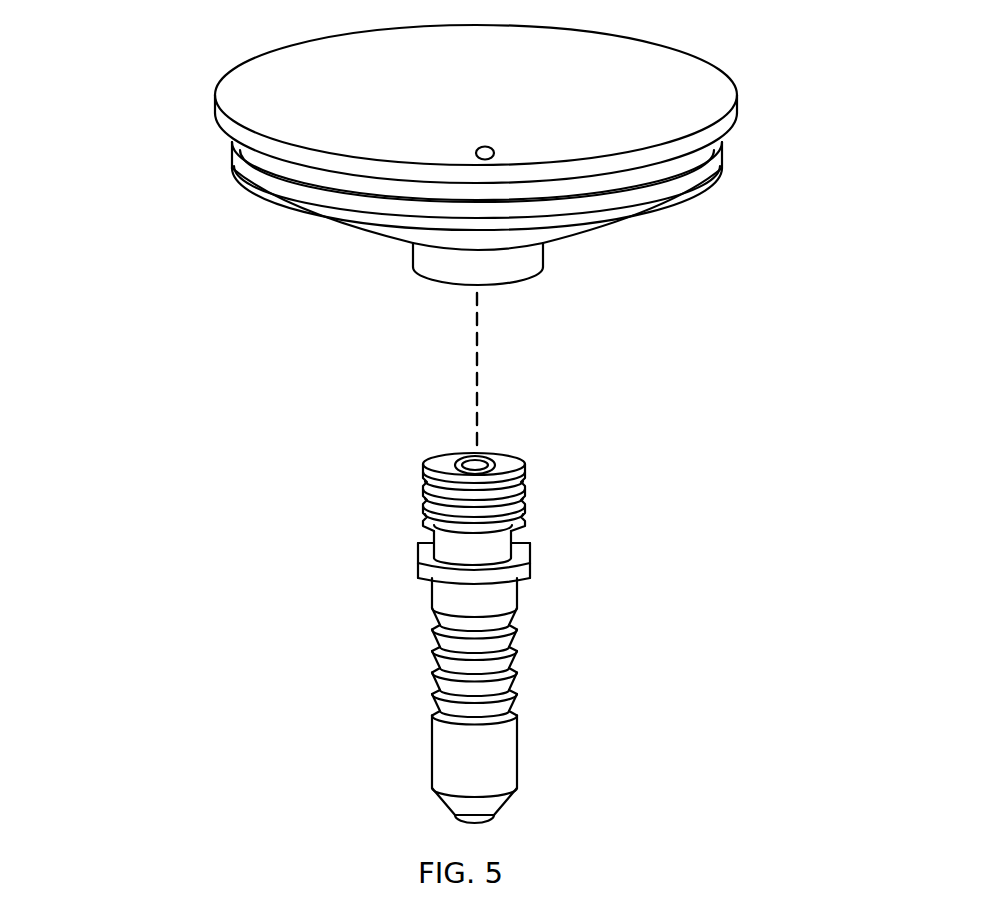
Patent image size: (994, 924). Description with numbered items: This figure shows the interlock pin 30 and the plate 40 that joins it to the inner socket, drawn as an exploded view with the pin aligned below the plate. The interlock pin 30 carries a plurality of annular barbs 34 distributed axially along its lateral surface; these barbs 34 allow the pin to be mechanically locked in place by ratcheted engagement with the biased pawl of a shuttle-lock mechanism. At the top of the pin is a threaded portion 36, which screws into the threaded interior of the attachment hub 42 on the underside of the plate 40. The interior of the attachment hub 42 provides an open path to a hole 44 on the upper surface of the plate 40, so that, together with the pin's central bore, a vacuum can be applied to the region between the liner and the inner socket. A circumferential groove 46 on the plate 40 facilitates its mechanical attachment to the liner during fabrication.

The interlock pin 30 is at (391, 638).
The annular barbs 34 is at (515, 672).
The threaded portion 36 is at (527, 482).
The plate 40 is at (440, 163).
The attachment hub 42 is at (545, 257).
The hole 44 is at (492, 148).
The circumferential groove 46 is at (712, 162).